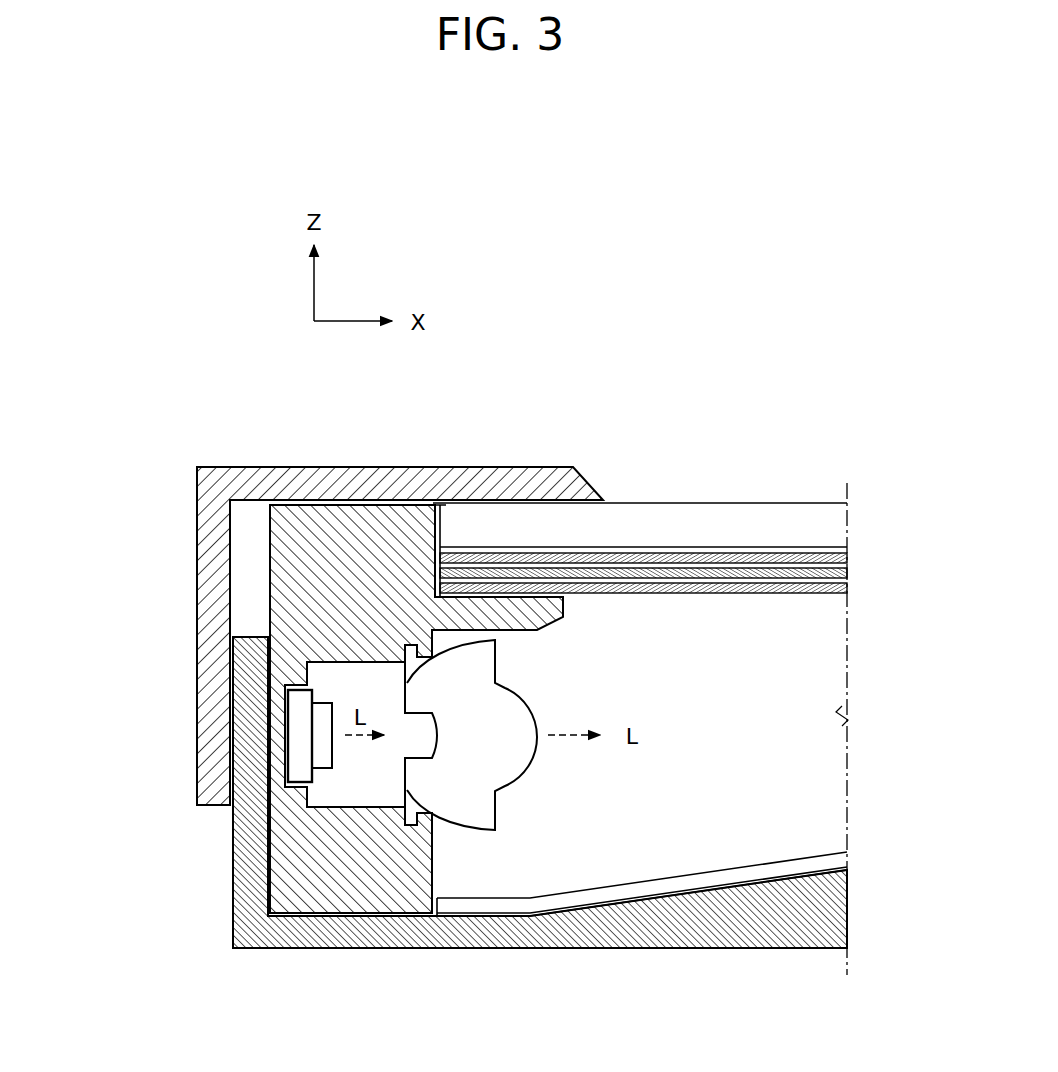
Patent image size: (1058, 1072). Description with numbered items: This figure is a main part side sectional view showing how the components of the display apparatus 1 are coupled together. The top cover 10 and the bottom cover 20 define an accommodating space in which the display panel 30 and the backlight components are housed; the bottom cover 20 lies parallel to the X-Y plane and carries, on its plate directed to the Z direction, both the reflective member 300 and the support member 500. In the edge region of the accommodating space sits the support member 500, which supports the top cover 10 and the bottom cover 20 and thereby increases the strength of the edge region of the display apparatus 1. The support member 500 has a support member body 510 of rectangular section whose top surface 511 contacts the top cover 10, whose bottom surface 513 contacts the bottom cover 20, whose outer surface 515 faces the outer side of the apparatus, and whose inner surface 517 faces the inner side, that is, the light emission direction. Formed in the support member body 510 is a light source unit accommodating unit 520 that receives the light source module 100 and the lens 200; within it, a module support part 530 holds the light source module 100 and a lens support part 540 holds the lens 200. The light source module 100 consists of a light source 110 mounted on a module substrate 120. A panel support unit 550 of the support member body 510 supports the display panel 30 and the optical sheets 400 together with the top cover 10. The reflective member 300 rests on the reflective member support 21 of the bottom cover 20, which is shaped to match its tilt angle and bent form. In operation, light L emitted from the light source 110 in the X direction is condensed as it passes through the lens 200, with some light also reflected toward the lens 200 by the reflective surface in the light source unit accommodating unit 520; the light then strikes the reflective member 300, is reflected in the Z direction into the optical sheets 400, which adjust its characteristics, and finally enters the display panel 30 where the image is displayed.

The display apparatus 1 is at (842, 357).
The top cover 10 is at (232, 480).
The bottom cover 20 is at (247, 950).
The reflective member support 21 is at (682, 887).
The display panel 30 is at (681, 494).
The light source module 100 is at (198, 731).
The light source 110 is at (320, 727).
The module substrate 120 is at (300, 708).
The lens 200 is at (477, 803).
The reflective member 300 is at (613, 890).
The optical sheets 400 is at (847, 558).
The support member 500 is at (340, 654).
The support member body 510 is at (301, 552).
The top surface 511 is at (381, 503).
The bottom surface 513 is at (335, 915).
The outer surface 515 is at (270, 597).
The inner surface 517 is at (437, 880).
The light source unit accommodating unit 520 is at (360, 668).
The module support part 530 is at (298, 764).
The lens support part 540 is at (412, 643).
The panel support unit 550 is at (527, 612).